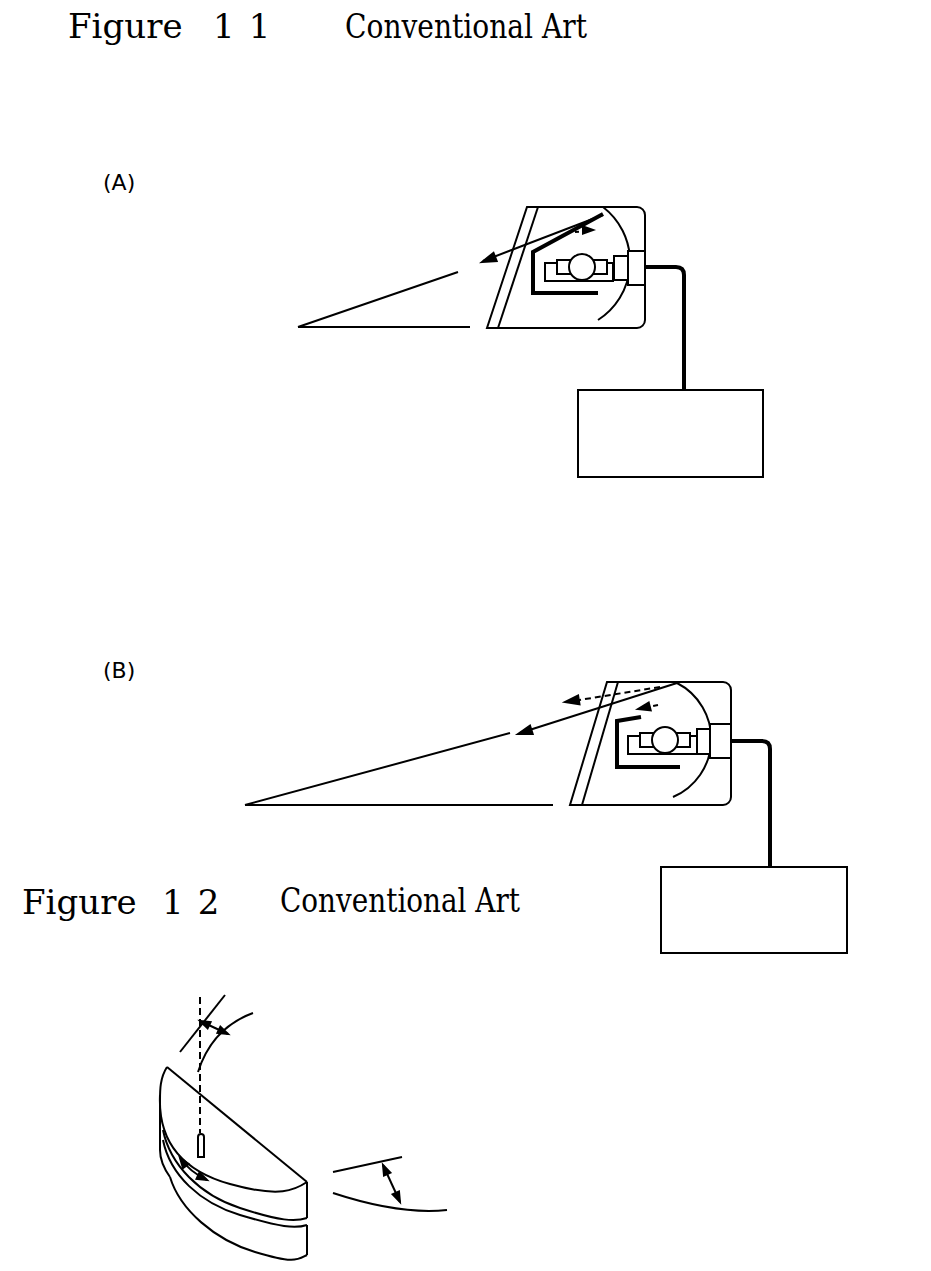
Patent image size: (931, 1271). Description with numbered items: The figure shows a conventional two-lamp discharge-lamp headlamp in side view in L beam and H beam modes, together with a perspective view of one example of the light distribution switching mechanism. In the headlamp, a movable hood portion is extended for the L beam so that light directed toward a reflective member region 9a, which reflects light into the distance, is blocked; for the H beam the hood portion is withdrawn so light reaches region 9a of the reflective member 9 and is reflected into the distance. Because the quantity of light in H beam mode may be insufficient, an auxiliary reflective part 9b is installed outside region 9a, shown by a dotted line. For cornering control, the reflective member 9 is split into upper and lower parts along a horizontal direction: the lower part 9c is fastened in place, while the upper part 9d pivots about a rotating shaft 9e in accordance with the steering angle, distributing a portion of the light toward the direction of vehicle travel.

In FIG. 12, the reflective member 9 is at (203, 1154).
In FIG. 11, the reflective member region 9a is at (682, 720).
In FIG. 11, the auxiliary reflective part 9b is at (672, 722).
In FIG. 12, the lower part of reflective member 9c is at (184, 1206).
In FIG. 12, the upper part of reflective member 9d is at (165, 1130).
In FIG. 12, the rotating shaft 9e is at (207, 1143).